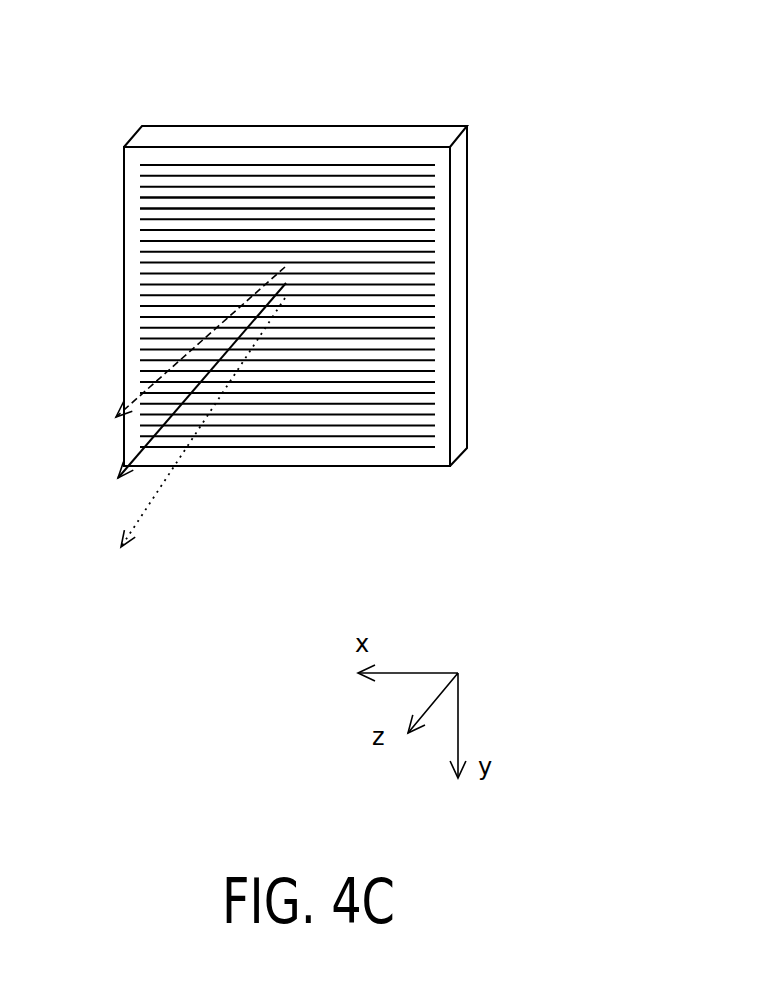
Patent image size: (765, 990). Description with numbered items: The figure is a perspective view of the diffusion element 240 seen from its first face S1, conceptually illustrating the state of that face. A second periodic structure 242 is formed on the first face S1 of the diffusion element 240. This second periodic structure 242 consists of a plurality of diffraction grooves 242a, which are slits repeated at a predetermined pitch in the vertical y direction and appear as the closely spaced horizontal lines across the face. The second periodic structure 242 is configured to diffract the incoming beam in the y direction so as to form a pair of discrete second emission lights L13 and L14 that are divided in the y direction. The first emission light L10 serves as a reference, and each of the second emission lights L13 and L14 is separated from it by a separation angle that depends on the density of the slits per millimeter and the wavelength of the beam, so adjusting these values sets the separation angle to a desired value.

The diffusion element 240 is at (440, 108).
The second periodic structure 242 is at (290, 146).
The diffraction grooves 242a is at (220, 210).
The first face S1 is at (442, 267).
The second emission light L13 is at (190, 450).
The second emission light L14 is at (140, 372).
The first emission light L10 is at (147, 452).